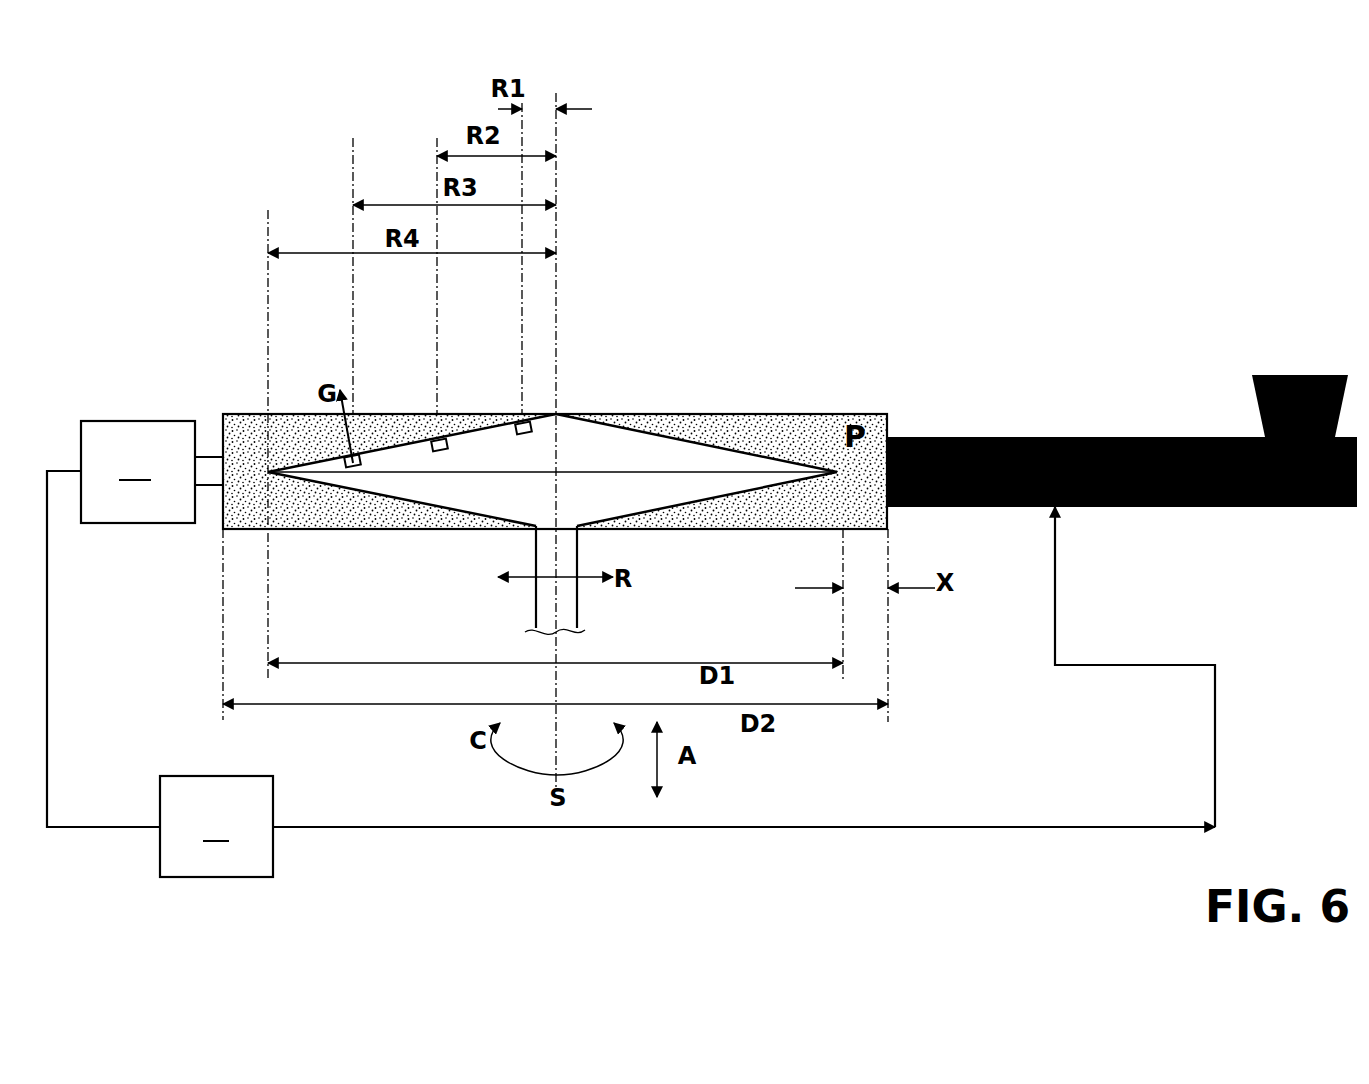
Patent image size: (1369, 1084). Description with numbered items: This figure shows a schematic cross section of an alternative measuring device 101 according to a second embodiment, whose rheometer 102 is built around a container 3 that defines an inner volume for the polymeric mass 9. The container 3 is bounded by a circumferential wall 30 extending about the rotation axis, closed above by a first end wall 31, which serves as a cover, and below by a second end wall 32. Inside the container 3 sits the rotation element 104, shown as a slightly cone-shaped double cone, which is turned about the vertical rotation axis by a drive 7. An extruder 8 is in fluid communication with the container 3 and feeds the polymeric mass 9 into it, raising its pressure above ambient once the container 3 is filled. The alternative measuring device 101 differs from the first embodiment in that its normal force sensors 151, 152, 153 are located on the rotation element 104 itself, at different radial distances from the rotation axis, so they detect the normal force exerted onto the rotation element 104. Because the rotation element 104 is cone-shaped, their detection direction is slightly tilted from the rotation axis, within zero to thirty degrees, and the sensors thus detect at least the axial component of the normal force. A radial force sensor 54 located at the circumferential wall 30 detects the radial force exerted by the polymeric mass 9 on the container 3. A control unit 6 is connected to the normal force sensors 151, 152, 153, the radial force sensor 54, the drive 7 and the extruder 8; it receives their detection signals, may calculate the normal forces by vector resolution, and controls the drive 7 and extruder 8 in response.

The rheometer 102 is at (138, 225).
The alternative measuring device 101 is at (1018, 238).
The circumferential wall 30 is at (223, 430).
The radial force sensor 54 is at (152, 472).
The control unit 6 is at (216, 826).
The container 3 is at (330, 530).
The rotation element 104 is at (482, 498).
The drive 7 is at (547, 608).
The third normal force sensor 153 is at (373, 440).
The second normal force sensor 152 is at (463, 418).
The first normal force sensor 151 is at (550, 415).
The first end wall 31 is at (713, 413).
The polymeric mass 9 is at (795, 430).
The second end wall 32 is at (747, 530).
The extruder 8 is at (1245, 507).